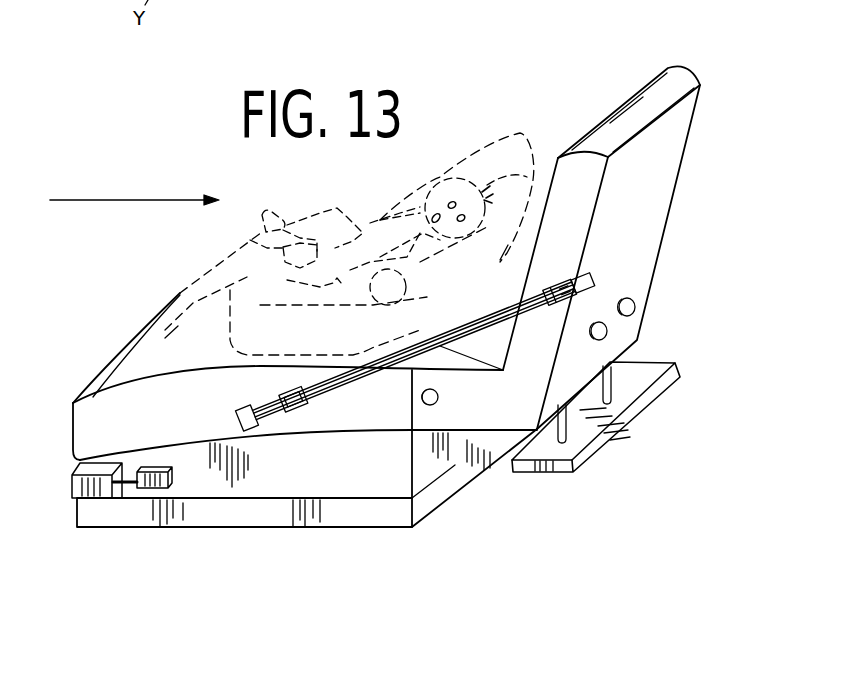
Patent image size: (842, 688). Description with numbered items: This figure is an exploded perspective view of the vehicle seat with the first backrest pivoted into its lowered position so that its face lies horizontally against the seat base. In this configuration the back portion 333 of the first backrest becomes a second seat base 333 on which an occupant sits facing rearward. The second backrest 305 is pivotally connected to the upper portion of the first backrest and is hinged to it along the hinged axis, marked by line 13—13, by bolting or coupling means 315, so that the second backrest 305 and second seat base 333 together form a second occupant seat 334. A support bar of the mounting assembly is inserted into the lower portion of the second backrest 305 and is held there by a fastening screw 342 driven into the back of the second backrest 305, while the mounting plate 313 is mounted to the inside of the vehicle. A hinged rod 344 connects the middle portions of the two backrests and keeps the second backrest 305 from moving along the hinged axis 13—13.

The hinged axis line 13 is at (740, 180).
The second backrest 305 is at (653, 157).
The mounting plate 313 is at (600, 450).
The bolting or coupling means 315 is at (423, 404).
The back portion of the first backrest 333 is at (152, 345).
The second occupant seat 334 is at (639, 70).
The fastening screw 342 is at (635, 305).
The hinged rod 344 is at (447, 344).